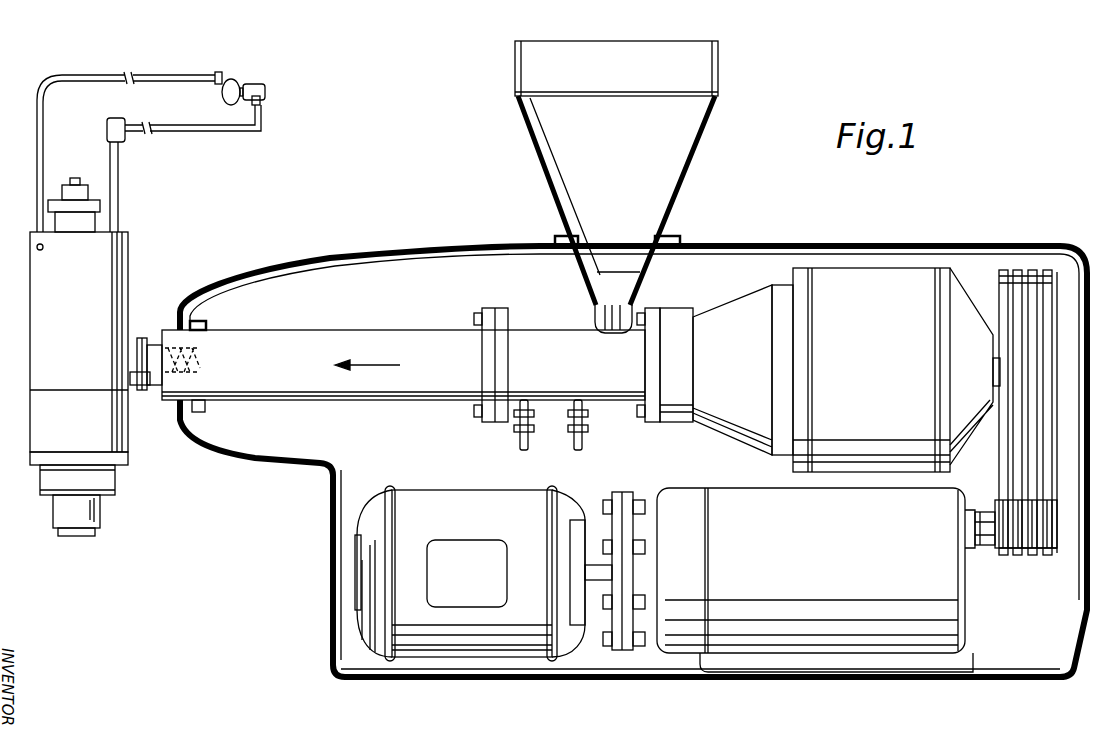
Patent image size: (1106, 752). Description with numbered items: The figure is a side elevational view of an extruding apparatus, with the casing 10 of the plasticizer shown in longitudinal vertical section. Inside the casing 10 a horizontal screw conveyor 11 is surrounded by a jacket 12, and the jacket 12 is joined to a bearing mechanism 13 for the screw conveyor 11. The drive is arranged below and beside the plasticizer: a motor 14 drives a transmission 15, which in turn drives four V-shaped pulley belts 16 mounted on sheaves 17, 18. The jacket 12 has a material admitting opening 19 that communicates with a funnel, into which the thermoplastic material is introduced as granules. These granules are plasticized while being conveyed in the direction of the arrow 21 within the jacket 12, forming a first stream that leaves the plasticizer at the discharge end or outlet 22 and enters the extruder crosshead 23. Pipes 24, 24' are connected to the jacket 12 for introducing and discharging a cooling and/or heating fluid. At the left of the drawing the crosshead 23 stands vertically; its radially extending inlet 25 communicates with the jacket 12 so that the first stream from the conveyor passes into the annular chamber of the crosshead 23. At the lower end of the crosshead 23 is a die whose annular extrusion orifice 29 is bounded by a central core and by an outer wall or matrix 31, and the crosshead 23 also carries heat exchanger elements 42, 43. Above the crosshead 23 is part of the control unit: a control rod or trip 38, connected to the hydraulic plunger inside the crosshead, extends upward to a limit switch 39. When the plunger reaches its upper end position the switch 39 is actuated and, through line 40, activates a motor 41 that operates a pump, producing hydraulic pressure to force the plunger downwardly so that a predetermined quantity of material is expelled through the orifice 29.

The housing 10 is at (268, 460).
The screw conveyor 11 is at (192, 370).
The jacket 12 is at (308, 330).
The bearing mechanism 13 is at (888, 275).
The motor 14 is at (442, 492).
The transmission 15 is at (742, 490).
The V-shaped pulley belts 16 is at (1035, 500).
The sheave 17 is at (1002, 552).
The sheave 18 is at (1012, 300).
The material admitting opening 19 is at (628, 312).
The arrow 21 is at (375, 362).
The discharge end or outlet 22 is at (150, 328).
The extruder crosshead 23 is at (113, 290).
The pipe 24 is at (504, 391).
The pipe 24' is at (600, 430).
The radially extending inlet 25 is at (140, 386).
The annular extrusion orifice 29 is at (100, 535).
The outer wall or matrix 31 is at (100, 515).
The control rod or trip 38 is at (122, 220).
The limit switch 39 is at (125, 135).
The line 40 is at (226, 132).
The motor 41 is at (242, 84).
The heat exchanger element 42 is at (125, 447).
The heat exchanger element 43 is at (115, 486).